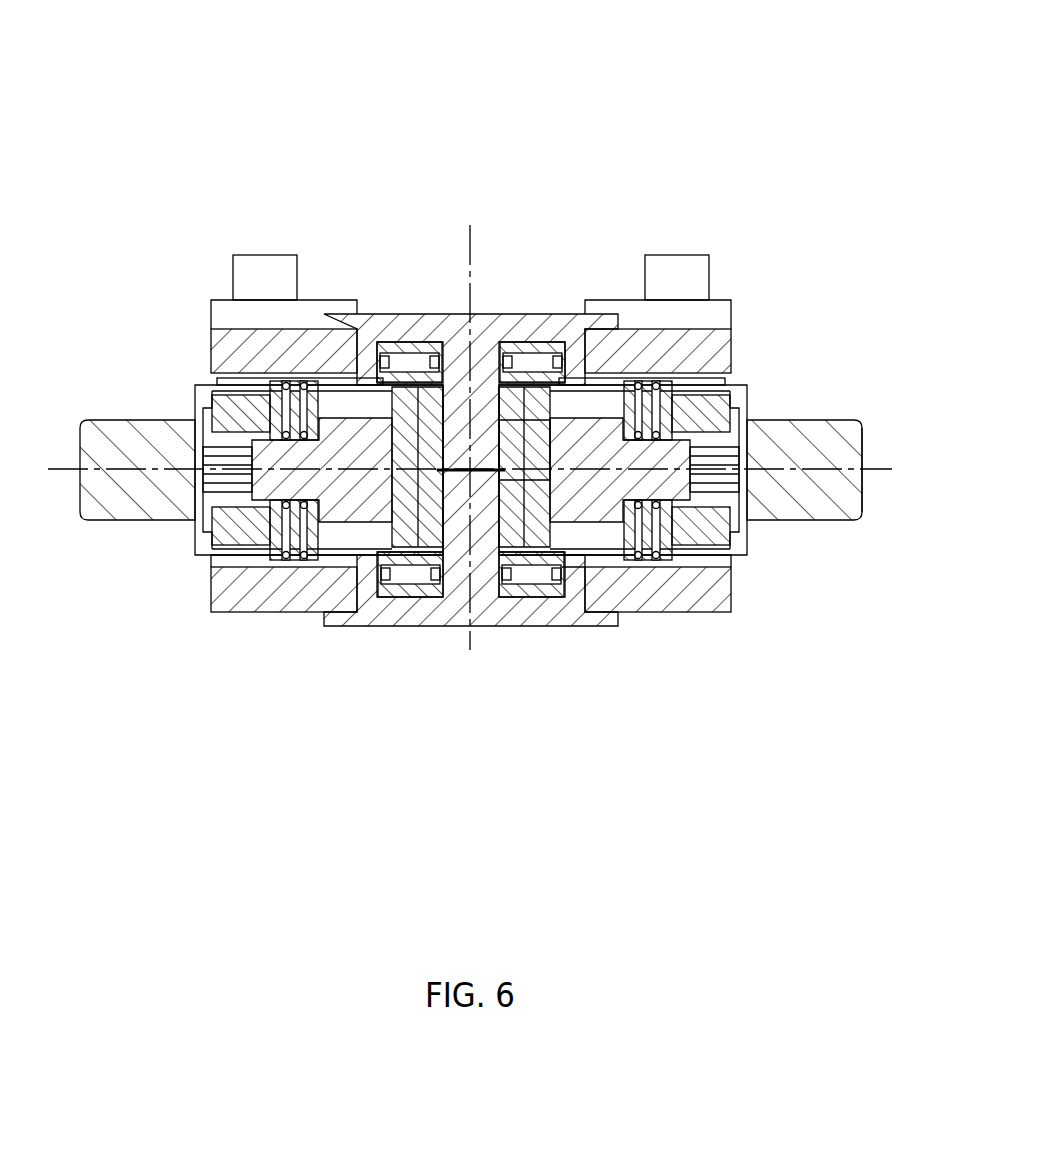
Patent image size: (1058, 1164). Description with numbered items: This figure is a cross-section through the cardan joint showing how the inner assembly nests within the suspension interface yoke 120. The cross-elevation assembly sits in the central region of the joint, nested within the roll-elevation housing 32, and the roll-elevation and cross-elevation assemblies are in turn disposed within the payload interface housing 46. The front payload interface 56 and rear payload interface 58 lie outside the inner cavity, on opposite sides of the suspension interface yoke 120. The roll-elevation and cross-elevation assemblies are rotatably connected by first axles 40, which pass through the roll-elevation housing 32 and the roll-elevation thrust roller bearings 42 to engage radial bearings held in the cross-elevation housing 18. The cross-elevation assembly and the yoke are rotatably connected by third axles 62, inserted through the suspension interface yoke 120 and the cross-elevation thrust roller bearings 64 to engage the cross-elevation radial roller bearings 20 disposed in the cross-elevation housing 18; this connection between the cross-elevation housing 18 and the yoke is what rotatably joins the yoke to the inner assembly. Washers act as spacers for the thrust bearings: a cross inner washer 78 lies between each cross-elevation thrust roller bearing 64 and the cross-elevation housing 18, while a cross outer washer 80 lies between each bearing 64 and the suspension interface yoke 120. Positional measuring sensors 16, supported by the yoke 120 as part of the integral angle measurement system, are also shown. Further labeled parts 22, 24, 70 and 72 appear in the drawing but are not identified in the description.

The positional measuring sensor 16 is at (272, 275).
The cross-elevation housing 18 is at (577, 535).
The cross-elevation radial roller bearing 20 is at (513, 433).
The end cap 22 is at (577, 384).
The central support block 24 is at (467, 258).
The roll-elevation housing 32 is at (742, 392).
The first axle 40 is at (212, 592).
The roll-elevation thrust roller bearing 42 is at (280, 480).
The payload interface housing 46 is at (863, 510).
The front payload interface 56 is at (163, 433).
The rear payload interface 58 is at (800, 500).
The third axle 62 is at (410, 326).
The cross-elevation thrust roller bearing 64 is at (546, 346).
The hub 70 is at (293, 480).
The collar 72 is at (265, 484).
The cross inner washer 78 is at (550, 396).
The cross outer washer 80 is at (535, 386).
The suspension interface yoke 120 is at (713, 595).